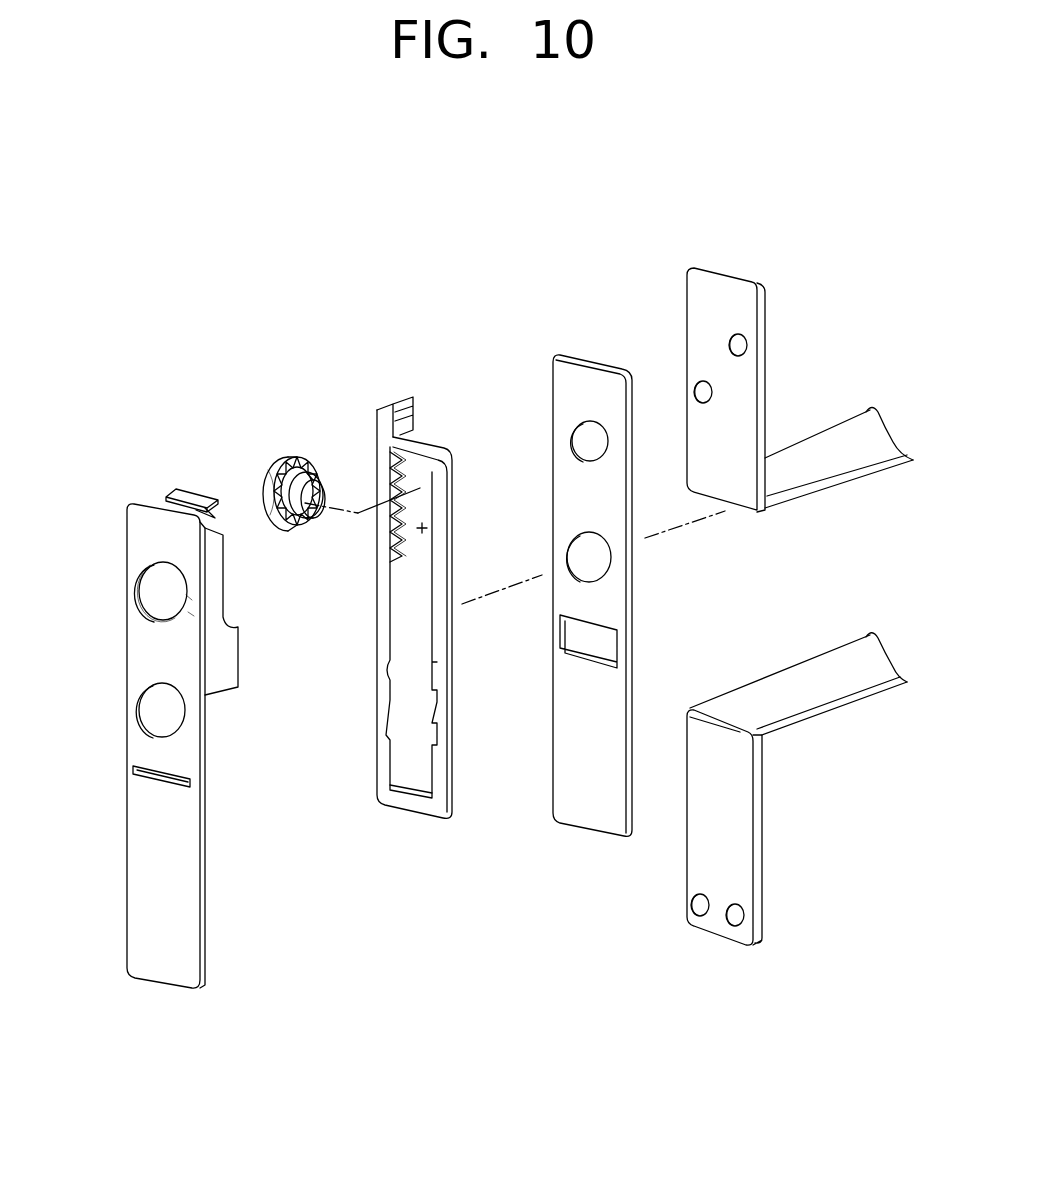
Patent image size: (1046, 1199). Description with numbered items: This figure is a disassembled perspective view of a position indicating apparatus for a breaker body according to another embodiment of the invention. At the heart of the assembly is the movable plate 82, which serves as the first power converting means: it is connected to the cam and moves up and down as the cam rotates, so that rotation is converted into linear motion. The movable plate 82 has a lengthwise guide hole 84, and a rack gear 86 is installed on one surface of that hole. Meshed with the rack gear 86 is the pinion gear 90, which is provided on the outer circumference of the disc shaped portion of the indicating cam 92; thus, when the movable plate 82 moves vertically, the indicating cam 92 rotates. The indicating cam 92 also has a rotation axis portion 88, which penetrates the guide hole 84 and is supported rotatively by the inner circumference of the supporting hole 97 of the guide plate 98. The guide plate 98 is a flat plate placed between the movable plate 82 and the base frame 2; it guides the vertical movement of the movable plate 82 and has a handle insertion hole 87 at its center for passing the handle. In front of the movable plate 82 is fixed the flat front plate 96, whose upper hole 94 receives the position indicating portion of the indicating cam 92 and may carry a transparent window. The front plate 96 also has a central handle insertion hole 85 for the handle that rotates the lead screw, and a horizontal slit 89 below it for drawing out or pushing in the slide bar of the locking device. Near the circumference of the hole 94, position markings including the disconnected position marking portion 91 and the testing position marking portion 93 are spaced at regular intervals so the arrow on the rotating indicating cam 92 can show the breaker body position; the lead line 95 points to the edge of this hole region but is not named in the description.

The base frame 2 is at (742, 390).
The movable plate 82 is at (420, 803).
The guide hole 84 is at (424, 526).
The handle insertion hole 85 is at (165, 710).
The rack gear 86 is at (404, 478).
The handle insertion hole 87 is at (589, 559).
The rotation axis portion 88 is at (313, 503).
The horizontal slit 89 is at (143, 773).
The pinion gear 90 is at (298, 460).
The disconnected position marking portion 91 is at (191, 612).
The indicating cam 92 is at (272, 467).
The testing position marking portion 93 is at (189, 598).
The hole 94 is at (163, 590).
The hole edge 95 is at (186, 577).
The front plate 96 is at (150, 950).
The supporting hole 97 is at (590, 440).
The guide plate 98 is at (583, 810).